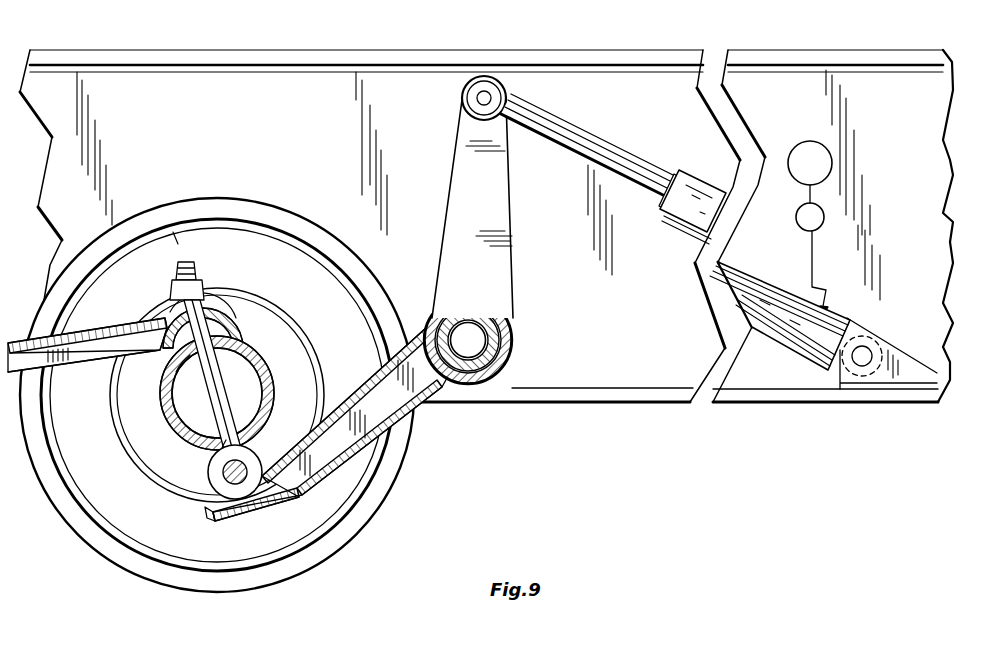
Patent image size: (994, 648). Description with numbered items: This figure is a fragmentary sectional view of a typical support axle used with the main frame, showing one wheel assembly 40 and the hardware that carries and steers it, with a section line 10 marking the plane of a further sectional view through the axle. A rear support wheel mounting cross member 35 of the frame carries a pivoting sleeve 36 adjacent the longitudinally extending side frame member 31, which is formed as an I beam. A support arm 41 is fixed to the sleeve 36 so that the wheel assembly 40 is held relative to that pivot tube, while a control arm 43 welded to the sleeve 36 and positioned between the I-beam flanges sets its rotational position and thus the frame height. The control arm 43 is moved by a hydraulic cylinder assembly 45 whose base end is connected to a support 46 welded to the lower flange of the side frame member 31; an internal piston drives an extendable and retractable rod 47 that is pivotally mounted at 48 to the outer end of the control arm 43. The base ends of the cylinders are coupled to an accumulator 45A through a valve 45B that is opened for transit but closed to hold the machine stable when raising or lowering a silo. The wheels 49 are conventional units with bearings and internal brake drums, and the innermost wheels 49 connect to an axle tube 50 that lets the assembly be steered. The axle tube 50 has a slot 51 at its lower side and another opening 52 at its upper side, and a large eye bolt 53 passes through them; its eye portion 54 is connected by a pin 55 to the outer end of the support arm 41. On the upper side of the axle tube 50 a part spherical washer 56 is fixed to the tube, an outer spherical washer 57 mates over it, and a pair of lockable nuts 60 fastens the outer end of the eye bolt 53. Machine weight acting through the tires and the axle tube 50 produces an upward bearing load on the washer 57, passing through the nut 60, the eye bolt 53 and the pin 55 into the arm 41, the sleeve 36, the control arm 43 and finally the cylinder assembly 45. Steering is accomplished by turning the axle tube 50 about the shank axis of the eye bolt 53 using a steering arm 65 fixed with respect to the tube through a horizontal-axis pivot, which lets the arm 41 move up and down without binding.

The section line 10- 10 is at (214, 170).
The longitudinally extending side frame member 31 is at (580, 403).
The rear support wheel mounting cross member 35 is at (500, 347).
The pivoting sleeve 36 is at (505, 320).
The wheel assembly 40 is at (299, 204).
The support arm 41 is at (380, 452).
The control arm 43 is at (458, 163).
The hydraulic cylinder assembly 45 is at (788, 284).
The accumulator 45A is at (804, 142).
The valve 45B is at (796, 223).
The support 46 is at (882, 360).
The extendable and retractable rod 47 is at (552, 136).
The pivot mounting 48 is at (487, 97).
The wheel 49 is at (366, 520).
The axle tube 50 is at (272, 392).
The slot 51 is at (241, 440).
The opening 52 is at (192, 360).
The eye bolt 53 is at (218, 380).
The eye portion 54 is at (208, 510).
The pin 55 is at (224, 470).
The part spherical washer 56 is at (236, 332).
The outer spherical washer 57 is at (216, 293).
The nut 60 is at (178, 290).
The steering arm 65 is at (78, 326).